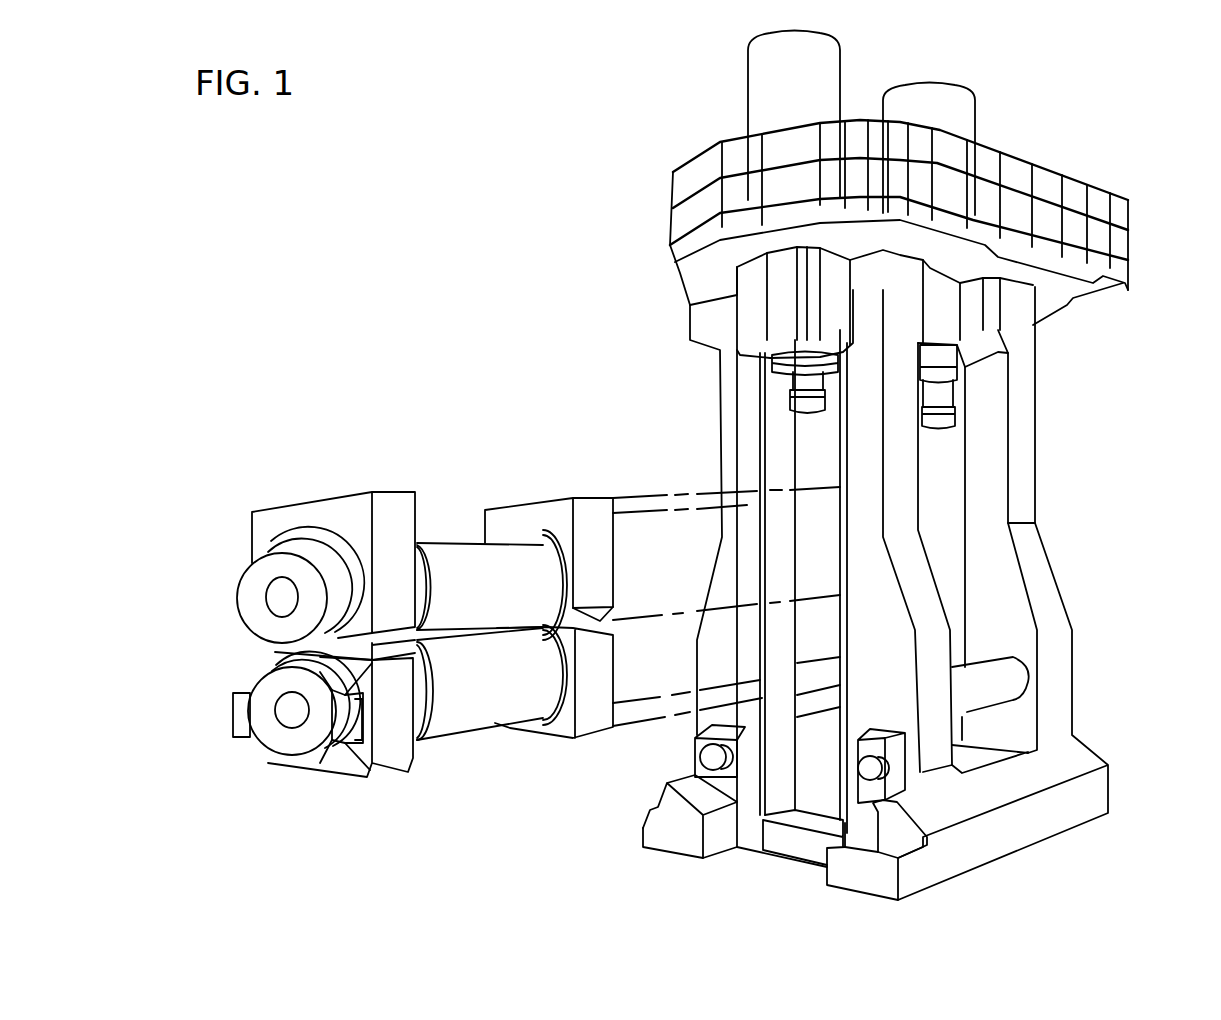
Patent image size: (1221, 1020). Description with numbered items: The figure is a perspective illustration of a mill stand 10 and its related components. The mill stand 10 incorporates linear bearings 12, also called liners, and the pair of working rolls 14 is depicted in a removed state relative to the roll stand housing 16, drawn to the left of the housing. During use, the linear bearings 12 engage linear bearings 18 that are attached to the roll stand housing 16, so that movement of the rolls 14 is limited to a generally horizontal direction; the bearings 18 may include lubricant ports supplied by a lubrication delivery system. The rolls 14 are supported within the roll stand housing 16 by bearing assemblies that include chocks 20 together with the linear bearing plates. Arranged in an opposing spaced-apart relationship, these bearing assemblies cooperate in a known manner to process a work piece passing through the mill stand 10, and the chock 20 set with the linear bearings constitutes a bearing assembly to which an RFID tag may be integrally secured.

The mill stand 10 is at (1202, 100).
The linear bearings 12 is at (600, 568).
The working rolls 14 is at (458, 550).
The roll stand housing 16 is at (1078, 825).
The linear bearings 18 is at (777, 435).
The chocks 20 is at (253, 512).